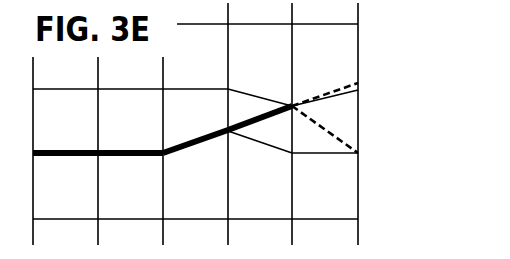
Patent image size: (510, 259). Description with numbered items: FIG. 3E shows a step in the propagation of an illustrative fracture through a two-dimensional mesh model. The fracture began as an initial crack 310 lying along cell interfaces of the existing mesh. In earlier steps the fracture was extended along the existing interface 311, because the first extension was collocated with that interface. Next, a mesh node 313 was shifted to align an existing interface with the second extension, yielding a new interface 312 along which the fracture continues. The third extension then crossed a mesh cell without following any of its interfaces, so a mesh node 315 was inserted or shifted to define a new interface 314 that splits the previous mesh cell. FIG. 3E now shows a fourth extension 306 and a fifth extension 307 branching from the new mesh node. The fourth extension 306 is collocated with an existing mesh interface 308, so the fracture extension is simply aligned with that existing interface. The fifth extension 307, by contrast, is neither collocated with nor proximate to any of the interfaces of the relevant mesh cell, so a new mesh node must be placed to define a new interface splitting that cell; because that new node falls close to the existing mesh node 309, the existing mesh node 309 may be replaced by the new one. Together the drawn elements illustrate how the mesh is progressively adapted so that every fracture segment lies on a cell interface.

The fourth extension 306 is at (343, 85).
The fifth extension 307 is at (328, 130).
The existing mesh interface 308 is at (347, 93).
The existing mesh node 309 is at (362, 153).
The initial crack 310 is at (70, 157).
The existing interface 311 is at (137, 150).
The new interface 312 is at (200, 138).
The mesh node 313 is at (225, 140).
The new interface 314 is at (268, 111).
The mesh node 315 is at (290, 110).